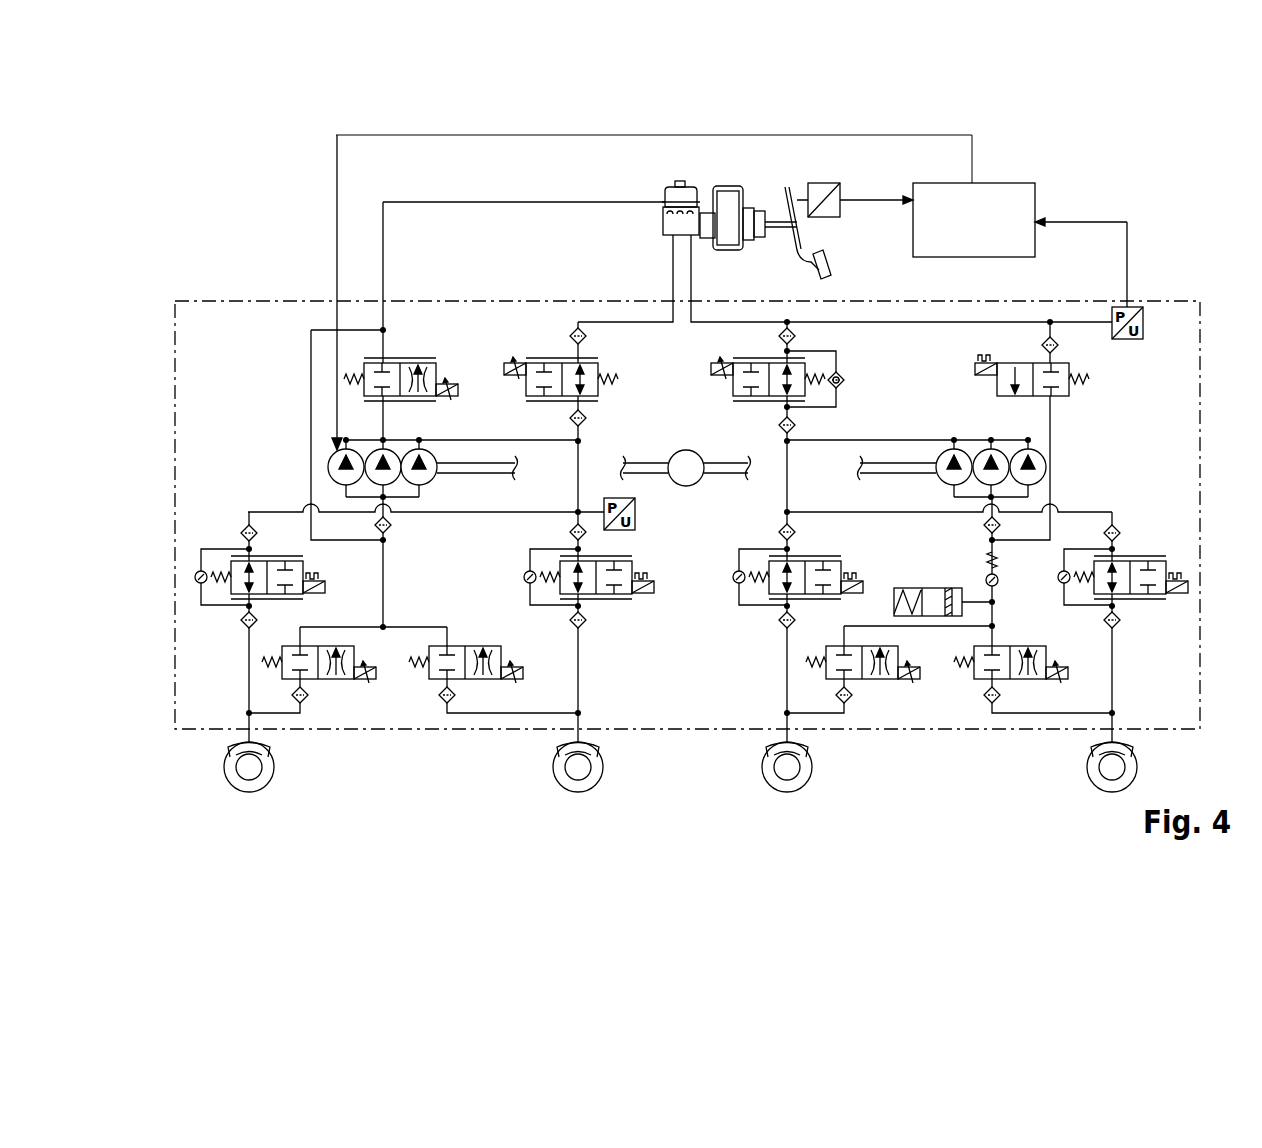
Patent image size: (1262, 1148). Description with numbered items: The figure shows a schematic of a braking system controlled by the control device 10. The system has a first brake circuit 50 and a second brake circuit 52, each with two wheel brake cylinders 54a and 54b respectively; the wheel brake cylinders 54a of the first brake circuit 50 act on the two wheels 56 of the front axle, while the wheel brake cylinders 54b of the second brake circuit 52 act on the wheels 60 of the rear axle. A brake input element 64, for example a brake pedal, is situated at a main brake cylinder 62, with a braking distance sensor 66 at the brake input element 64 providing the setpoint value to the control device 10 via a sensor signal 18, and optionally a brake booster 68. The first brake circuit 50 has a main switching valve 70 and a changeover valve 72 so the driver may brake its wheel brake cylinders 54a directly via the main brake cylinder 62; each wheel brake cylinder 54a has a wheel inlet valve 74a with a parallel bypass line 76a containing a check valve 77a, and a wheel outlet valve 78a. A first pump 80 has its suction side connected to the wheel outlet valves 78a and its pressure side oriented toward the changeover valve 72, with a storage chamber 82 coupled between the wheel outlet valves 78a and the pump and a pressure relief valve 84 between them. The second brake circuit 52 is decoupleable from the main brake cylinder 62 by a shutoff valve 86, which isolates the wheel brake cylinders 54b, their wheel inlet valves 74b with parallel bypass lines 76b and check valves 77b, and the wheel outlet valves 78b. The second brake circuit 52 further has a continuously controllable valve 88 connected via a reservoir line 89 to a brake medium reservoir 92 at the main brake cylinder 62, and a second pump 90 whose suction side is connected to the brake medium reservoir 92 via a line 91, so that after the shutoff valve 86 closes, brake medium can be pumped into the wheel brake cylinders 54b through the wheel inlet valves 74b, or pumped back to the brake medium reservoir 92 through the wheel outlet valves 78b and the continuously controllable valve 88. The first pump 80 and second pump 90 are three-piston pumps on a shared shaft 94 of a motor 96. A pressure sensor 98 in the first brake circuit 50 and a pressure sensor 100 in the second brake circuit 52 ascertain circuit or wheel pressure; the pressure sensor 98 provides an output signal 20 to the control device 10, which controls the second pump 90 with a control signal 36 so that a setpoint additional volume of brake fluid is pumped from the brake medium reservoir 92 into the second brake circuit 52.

The control device 10 is at (963, 258).
The sensor signal 18 is at (880, 207).
The output signal 20 is at (1115, 220).
The control signal 36 is at (491, 135).
The first brake circuit 50 is at (943, 742).
The second brake circuit 52 is at (428, 742).
The wheel brake cylinders 54a is at (806, 746).
The wheel brake cylinders 54b is at (271, 746).
The wheels 56 is at (793, 768).
The wheels 60 is at (258, 768).
The main brake cylinder 62 is at (666, 230).
The brake input element 64 is at (800, 235).
The braking distance sensor 66 is at (840, 186).
The brake booster 68 is at (740, 250).
The main switching valve 70 is at (997, 384).
The changeover valve 72 is at (733, 384).
The wheel inlet valve 74a is at (838, 561).
The wheel inlet valve 74b is at (308, 561).
The bypass line 76a is at (757, 606).
The bypass line 76b is at (220, 606).
The check valve 77a is at (732, 575).
The check valve 77b is at (193, 575).
The wheel outlet valve 78a is at (1010, 646).
The wheel outlet valve 78b is at (462, 646).
The first pump 80 is at (938, 480).
The storage chamber 82 is at (927, 588).
The pressure relief valve 84 is at (984, 577).
The shutoff valve 86 is at (612, 378).
The continuously controllable valve 88 is at (437, 383).
The reservoir line 89 is at (383, 250).
The second pump 90 is at (437, 478).
The line 91 is at (311, 441).
The brake medium reservoir 92 is at (673, 195).
The shared shaft 94 is at (726, 478).
The motor 96 is at (680, 450).
The pressure sensor 98 is at (1127, 338).
The pressure sensor 100 is at (635, 514).